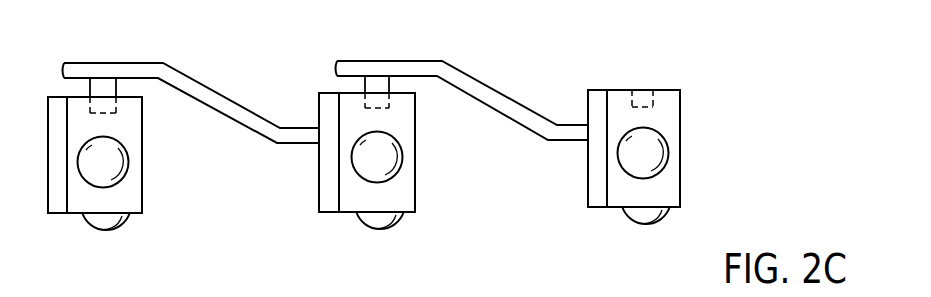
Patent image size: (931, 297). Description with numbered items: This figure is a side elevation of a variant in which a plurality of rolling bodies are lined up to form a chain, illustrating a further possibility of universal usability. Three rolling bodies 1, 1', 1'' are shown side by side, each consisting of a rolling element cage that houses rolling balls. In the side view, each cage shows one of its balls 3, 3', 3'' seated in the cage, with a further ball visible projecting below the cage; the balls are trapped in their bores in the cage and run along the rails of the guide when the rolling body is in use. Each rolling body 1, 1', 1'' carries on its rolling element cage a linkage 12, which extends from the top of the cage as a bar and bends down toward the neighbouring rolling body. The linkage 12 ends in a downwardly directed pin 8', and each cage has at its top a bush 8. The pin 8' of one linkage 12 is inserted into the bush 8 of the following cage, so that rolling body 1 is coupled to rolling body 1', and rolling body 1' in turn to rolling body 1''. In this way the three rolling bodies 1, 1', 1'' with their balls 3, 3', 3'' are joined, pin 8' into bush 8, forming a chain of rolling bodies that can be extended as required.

The rolling body 1 is at (665, 149).
The rolling body 1' is at (403, 152).
The rolling body 1'' is at (133, 155).
The ball 3 is at (669, 205).
The ball 3' is at (378, 213).
The ball 3'' is at (104, 216).
The bush 8 is at (405, 75).
The pin 8' is at (241, 61).
The linkage 12 is at (237, 110).